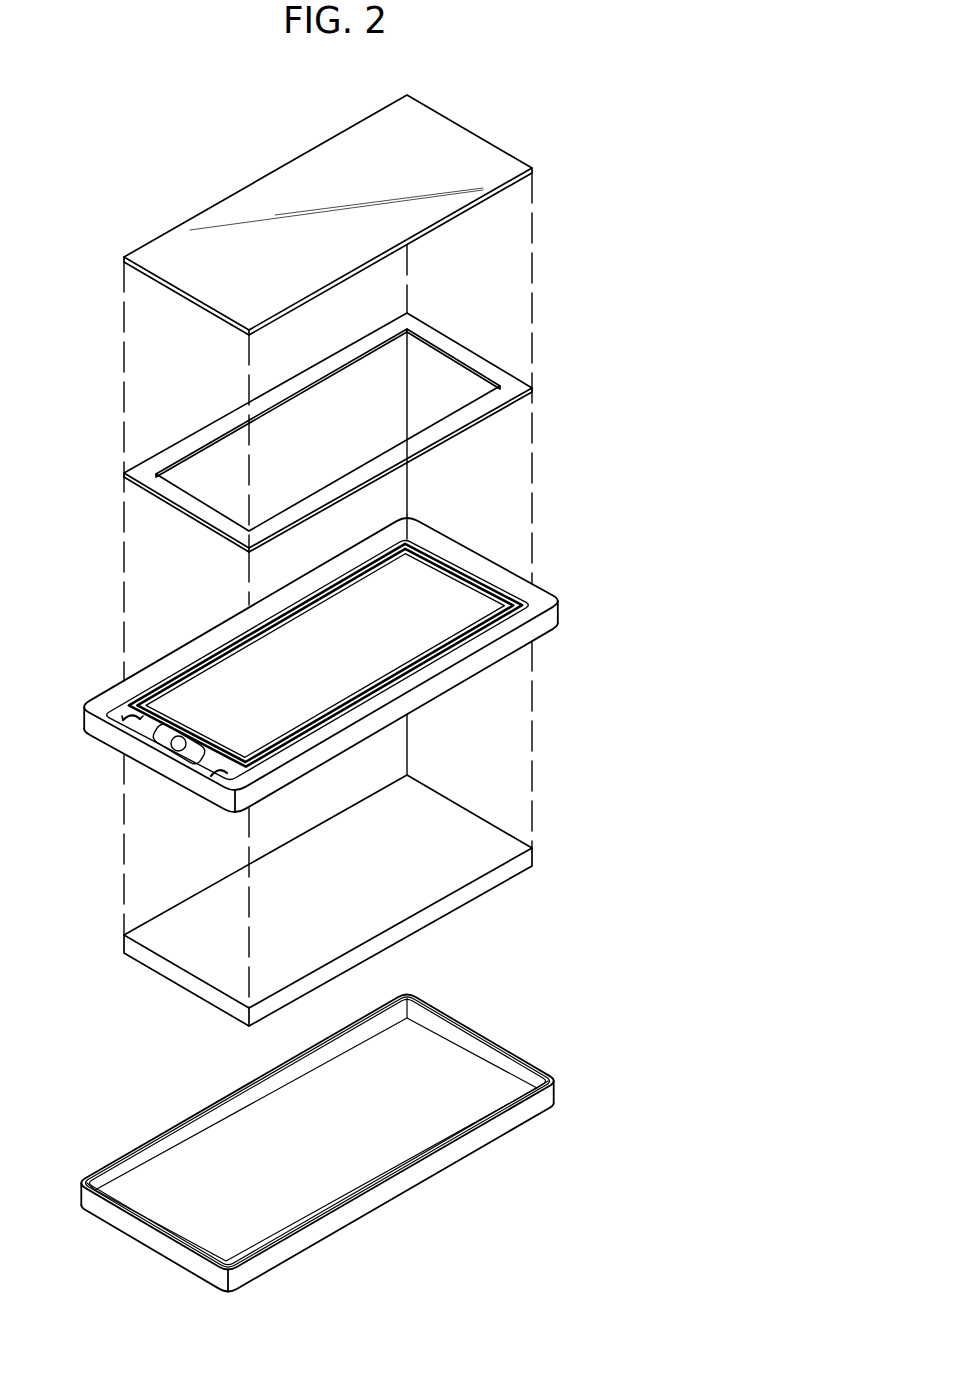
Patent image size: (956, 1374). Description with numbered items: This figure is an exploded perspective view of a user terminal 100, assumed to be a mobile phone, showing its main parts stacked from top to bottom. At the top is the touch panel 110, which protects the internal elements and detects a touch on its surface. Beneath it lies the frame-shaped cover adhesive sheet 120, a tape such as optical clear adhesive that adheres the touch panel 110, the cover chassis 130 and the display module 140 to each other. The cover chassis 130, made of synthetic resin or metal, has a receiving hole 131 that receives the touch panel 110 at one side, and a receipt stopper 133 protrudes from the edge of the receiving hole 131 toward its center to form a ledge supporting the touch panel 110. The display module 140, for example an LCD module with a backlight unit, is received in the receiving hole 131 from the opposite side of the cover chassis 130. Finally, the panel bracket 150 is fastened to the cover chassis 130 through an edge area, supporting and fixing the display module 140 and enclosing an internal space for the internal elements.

The user terminal 100 is at (122, 210).
The touch panel 110 is at (483, 148).
The cover adhesive sheet 120 is at (453, 375).
The cover chassis 130 is at (545, 597).
The receiving hole 131 is at (405, 596).
The receipt stopper 133 is at (466, 578).
The display module 140 is at (468, 822).
The panel bracket 150 is at (552, 1104).